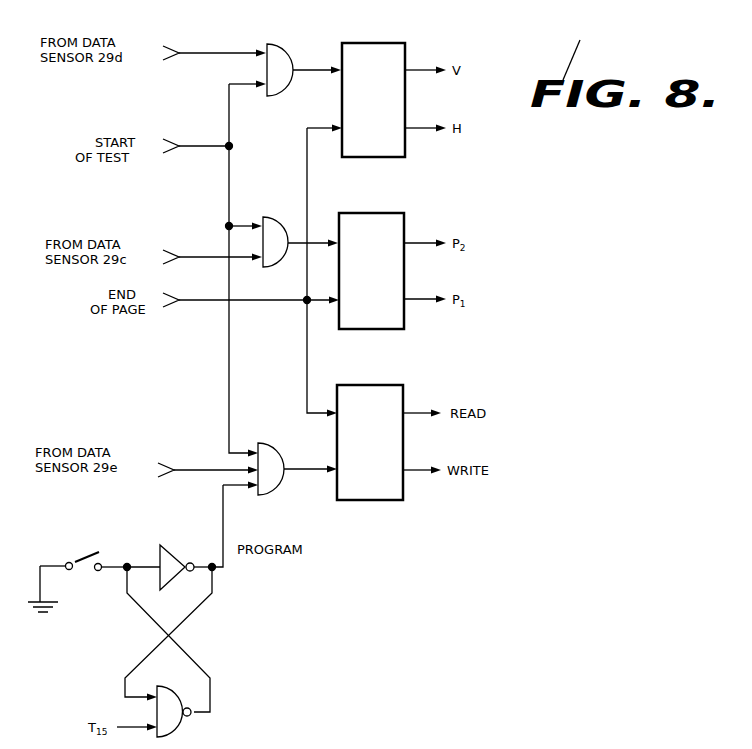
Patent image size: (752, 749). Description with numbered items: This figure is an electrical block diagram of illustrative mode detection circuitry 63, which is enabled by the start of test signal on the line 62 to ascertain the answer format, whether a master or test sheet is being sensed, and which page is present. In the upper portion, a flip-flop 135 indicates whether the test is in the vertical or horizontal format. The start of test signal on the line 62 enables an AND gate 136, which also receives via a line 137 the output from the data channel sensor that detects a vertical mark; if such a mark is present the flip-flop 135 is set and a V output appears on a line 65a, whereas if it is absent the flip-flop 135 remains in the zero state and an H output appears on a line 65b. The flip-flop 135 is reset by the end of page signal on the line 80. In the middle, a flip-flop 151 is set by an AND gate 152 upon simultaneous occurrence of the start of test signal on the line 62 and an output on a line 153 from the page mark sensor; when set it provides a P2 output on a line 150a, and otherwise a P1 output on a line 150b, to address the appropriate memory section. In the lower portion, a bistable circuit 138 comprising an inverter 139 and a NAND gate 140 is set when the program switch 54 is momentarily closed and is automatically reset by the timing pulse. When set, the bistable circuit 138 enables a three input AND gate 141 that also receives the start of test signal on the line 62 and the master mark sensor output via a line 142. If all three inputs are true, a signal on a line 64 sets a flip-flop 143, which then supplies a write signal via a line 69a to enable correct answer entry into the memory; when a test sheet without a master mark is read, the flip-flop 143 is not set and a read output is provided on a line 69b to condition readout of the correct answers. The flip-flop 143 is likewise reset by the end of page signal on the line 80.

The line 137 is at (216, 52).
The line 62 is at (203, 146).
The AND gate 136 is at (291, 60).
The flip-flop 135 is at (388, 43).
The line 65a is at (410, 70).
The line 65b is at (411, 128).
The line 153 is at (207, 257).
The AND gate 152 is at (285, 217).
The flip-flop 151 is at (405, 278).
The line 150a is at (410, 243).
The line 150b is at (410, 299).
The line 80 is at (253, 302).
The line 142 is at (201, 470).
The three input AND gate 141 is at (272, 497).
The line 64 is at (301, 466).
The flip-flop 143 is at (405, 445).
The line 69b is at (410, 413).
The line 69a is at (410, 470).
The program switch 54 is at (80, 553).
The inverter 139 is at (175, 528).
The bistable circuit 138 is at (245, 640).
The NAND gate 140 is at (185, 730).
The mode detection circuitry 63 is at (550, 358).